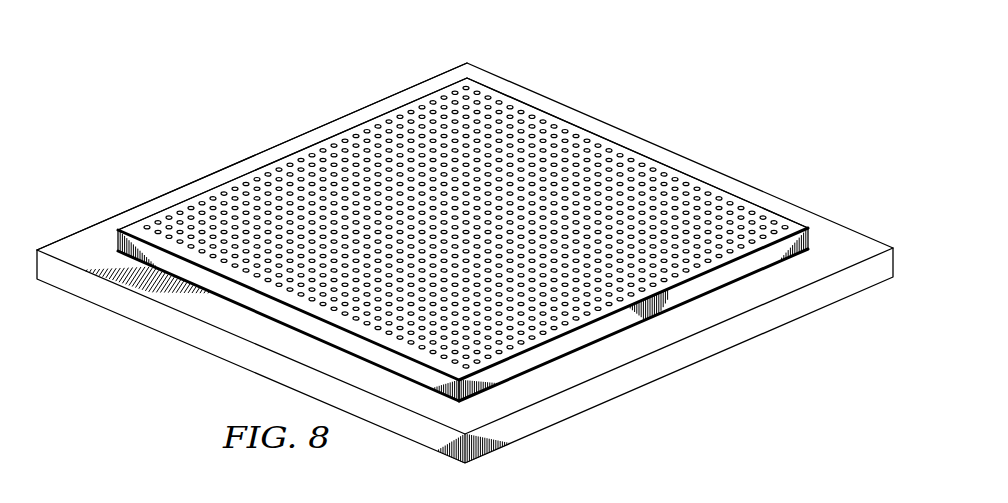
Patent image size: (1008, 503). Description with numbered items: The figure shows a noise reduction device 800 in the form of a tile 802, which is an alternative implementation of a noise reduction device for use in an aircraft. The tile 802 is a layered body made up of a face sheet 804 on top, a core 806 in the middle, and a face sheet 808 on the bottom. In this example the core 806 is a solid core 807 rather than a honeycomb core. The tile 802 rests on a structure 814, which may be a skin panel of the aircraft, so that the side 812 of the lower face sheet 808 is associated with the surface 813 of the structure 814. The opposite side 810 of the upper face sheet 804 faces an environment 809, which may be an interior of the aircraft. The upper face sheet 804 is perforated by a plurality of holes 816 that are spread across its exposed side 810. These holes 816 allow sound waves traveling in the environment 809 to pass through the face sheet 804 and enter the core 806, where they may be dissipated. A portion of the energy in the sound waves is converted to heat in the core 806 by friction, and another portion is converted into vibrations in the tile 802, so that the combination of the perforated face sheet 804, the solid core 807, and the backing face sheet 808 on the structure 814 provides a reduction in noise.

The noise reduction device 800 is at (657, 333).
The tile 802 is at (693, 310).
The face sheet 804 is at (732, 262).
The core 806 is at (812, 237).
The solid core 807 is at (775, 252).
The face sheet 808 is at (543, 367).
The environment 809 is at (230, 137).
The side 810 is at (755, 222).
The side 812 is at (603, 338).
The surface 813 is at (88, 240).
The structure 814 is at (146, 195).
The plurality of holes 816 is at (553, 145).